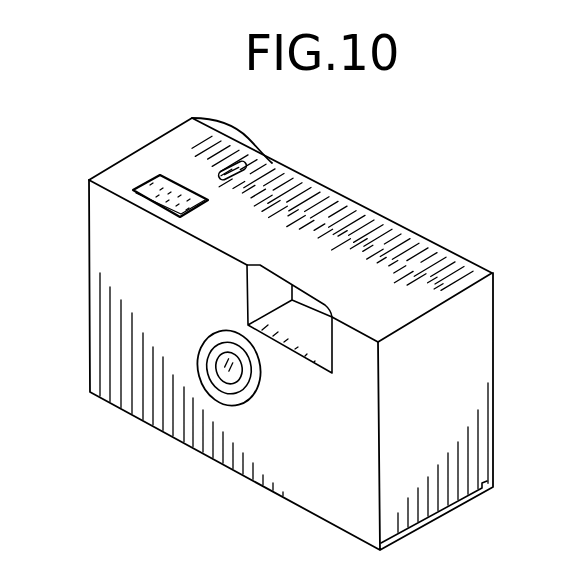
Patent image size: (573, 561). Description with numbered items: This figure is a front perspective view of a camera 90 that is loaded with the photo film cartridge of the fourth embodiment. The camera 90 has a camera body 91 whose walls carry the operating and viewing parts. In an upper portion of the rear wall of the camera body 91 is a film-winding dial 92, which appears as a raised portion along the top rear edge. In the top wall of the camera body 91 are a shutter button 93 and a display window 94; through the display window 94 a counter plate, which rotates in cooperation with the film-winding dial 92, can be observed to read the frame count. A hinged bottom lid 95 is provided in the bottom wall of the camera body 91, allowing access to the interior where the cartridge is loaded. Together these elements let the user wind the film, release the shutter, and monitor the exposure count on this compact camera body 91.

The camera 90 is at (381, 192).
The camera body 91 is at (444, 234).
The film-winding dial 92 is at (262, 141).
The shutter button 93 is at (131, 189).
The display window 94 is at (216, 172).
The hinged bottom lid 95 is at (453, 512).